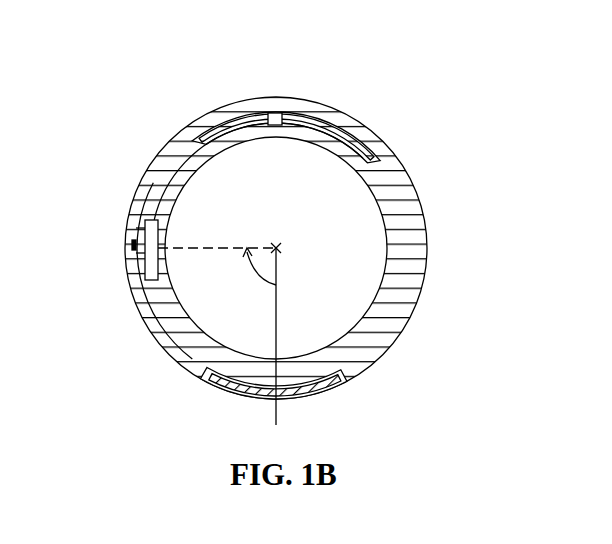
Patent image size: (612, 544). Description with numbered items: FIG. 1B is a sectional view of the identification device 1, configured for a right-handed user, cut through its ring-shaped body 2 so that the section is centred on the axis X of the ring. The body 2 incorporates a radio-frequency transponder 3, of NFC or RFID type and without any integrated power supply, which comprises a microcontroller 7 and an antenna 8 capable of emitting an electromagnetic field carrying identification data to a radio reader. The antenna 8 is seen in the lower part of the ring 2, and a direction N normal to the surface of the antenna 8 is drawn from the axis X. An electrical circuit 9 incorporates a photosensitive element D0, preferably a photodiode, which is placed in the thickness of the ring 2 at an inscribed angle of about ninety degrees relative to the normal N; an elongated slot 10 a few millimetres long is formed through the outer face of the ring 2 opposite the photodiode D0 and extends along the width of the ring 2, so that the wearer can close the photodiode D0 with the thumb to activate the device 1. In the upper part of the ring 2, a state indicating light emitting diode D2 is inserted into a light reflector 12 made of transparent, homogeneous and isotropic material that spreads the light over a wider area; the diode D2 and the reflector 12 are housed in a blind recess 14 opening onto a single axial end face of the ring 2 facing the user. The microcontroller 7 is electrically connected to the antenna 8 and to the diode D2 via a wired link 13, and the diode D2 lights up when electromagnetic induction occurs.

The identification device 1 is at (187, 93).
The ring-shaped body 2 is at (410, 232).
The radio-frequency transponder 3 is at (134, 284).
The microcontroller 7 is at (143, 185).
The antenna 8 is at (318, 395).
The electrical circuit 9 is at (120, 252).
The elongated slot 10 is at (133, 245).
The light reflector 12 is at (372, 128).
The wired link 13 is at (180, 157).
The blind recess 14 is at (333, 118).
The photosensitive element D0 is at (145, 228).
The light emitting diode D2 is at (278, 113).
The axis X is at (284, 251).
The normal direction N is at (278, 330).